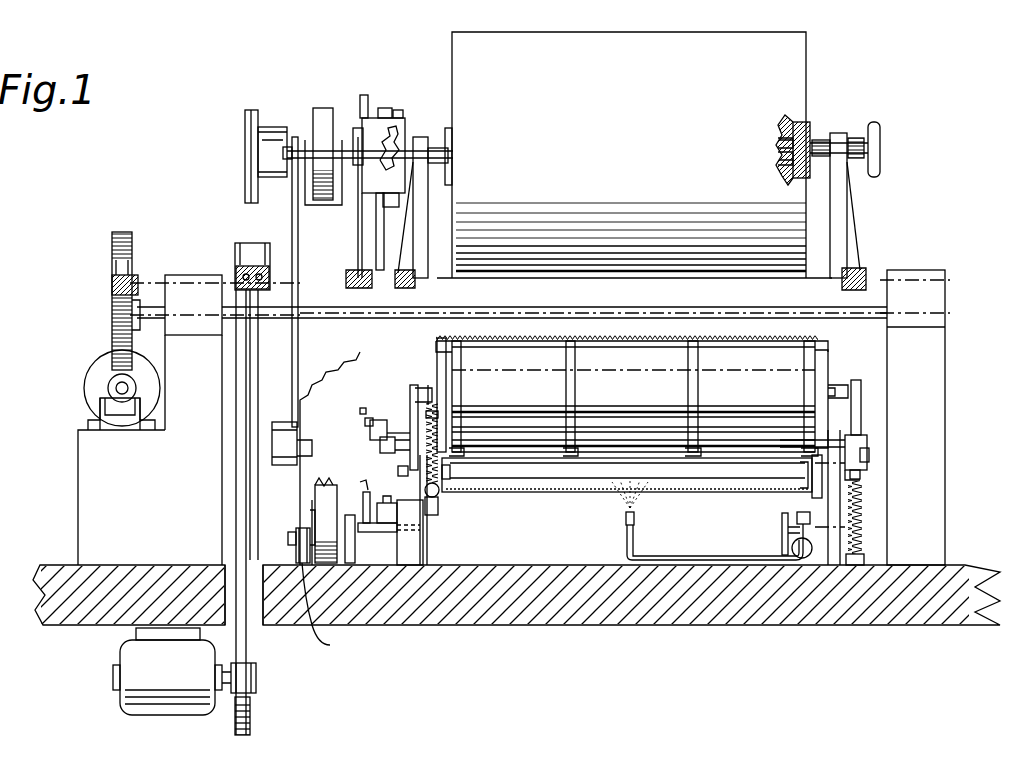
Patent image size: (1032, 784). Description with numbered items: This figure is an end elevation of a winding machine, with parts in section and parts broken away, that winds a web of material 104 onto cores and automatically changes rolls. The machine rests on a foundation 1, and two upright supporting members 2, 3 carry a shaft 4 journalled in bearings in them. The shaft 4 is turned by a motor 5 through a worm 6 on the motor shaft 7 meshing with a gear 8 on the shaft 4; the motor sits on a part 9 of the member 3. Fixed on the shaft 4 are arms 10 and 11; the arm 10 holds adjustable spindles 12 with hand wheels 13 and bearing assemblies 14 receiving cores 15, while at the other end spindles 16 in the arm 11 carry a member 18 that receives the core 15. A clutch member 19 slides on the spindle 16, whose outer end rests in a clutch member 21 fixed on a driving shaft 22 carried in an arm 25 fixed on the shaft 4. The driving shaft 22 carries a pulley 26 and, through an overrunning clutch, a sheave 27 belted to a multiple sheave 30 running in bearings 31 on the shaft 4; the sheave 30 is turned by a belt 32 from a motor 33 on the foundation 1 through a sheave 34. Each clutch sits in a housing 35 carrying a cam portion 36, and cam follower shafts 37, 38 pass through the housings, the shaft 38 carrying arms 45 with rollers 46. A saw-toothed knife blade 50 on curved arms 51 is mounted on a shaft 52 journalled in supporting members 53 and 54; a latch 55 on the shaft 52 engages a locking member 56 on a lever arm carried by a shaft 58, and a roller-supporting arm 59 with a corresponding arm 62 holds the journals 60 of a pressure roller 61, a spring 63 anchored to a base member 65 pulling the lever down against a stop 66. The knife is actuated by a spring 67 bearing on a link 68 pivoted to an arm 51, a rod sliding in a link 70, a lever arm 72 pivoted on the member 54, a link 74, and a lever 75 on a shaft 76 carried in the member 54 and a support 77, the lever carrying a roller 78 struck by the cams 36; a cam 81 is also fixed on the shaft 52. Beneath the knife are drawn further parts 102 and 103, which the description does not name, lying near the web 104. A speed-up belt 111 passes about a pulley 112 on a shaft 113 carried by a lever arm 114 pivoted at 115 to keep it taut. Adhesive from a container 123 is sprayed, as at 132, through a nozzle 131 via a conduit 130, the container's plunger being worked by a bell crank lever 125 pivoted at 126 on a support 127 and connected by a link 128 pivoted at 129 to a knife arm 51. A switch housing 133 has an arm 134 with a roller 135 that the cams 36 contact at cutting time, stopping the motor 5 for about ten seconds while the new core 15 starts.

The foundation 1 is at (976, 583).
The upright supporting member 2 is at (937, 454).
The upright supporting member 3 is at (186, 272).
The shaft 4 is at (385, 322).
The motor 5 is at (94, 377).
The worm 6 is at (109, 386).
The motor shaft 7 is at (123, 396).
The gear 8 is at (112, 331).
The part of supporting member 9 is at (88, 491).
The arm 10 is at (849, 225).
The arm 11 is at (421, 236).
The spindle 12 is at (853, 137).
The adjusting hand wheel 13 is at (879, 153).
The bearing assembly 14 is at (779, 140).
The core 15 is at (782, 163).
The spindle 16 is at (437, 148).
The member 18 is at (450, 127).
The clutch member 19 is at (400, 138).
The clutch member 21 is at (383, 160).
The driving shaft 22 is at (284, 128).
The arm 25 is at (300, 225).
The pulley 26 is at (320, 112).
The sheave 27 is at (245, 122).
The multiple sheave 30 is at (237, 245).
The bearing 31 is at (272, 266).
The belt 32 is at (236, 492).
The motor 33 is at (162, 706).
The sheave 34 is at (252, 722).
The clutch housing 35 is at (358, 126).
The cam portion 36 is at (362, 95).
The cam follower shaft 37 is at (384, 246).
The cam follower shaft 38 is at (381, 216).
The arm 45 is at (380, 108).
The roller 46 is at (395, 112).
The knife blade 50 is at (618, 341).
The curved arm 51 is at (461, 357).
The shaft 52 is at (735, 443).
The supporting member 53 is at (833, 572).
The supporting member 54 is at (423, 556).
The latch 55 is at (867, 449).
The locking member 56 is at (863, 470).
The shaft 58 is at (869, 456).
The roller-supporting arm 59 is at (861, 403).
The journal 60 is at (428, 387).
The pressure roller 61 is at (510, 382).
The arm 62 is at (410, 403).
The spring 63 is at (862, 507).
The base member 65 is at (864, 553).
The stop 66 is at (862, 480).
The spring 67 is at (440, 434).
The link 68 is at (426, 414).
The link 70 is at (440, 494).
The lever arm 72 is at (436, 510).
The link 74 is at (387, 503).
The lever 75 is at (363, 496).
The shaft 76 is at (389, 533).
The support 77 is at (355, 549).
The roller 78 is at (361, 482).
The cam 81 is at (380, 447).
The tray 102 is at (733, 477).
The lug 103 is at (450, 472).
The material 104 is at (808, 120).
The speed-up belt 111 is at (316, 487).
The pulley 112 is at (310, 520).
The shaft 113 is at (288, 538).
The lever arm 114 is at (297, 548).
The pivot 115 is at (326, 607).
The adhesive container 123 is at (790, 548).
The bell crank lever 125 is at (803, 518).
The pivot 126 is at (782, 517).
The support 127 is at (788, 531).
The link 128 is at (812, 496).
The pivot 129 is at (798, 464).
The conduit 130 is at (697, 558).
The nozzle 131 is at (636, 520).
The adhesive spray 132 is at (622, 506).
The switch housing 133 is at (371, 438).
The arm 134 is at (366, 420).
The roller 135 is at (364, 408).